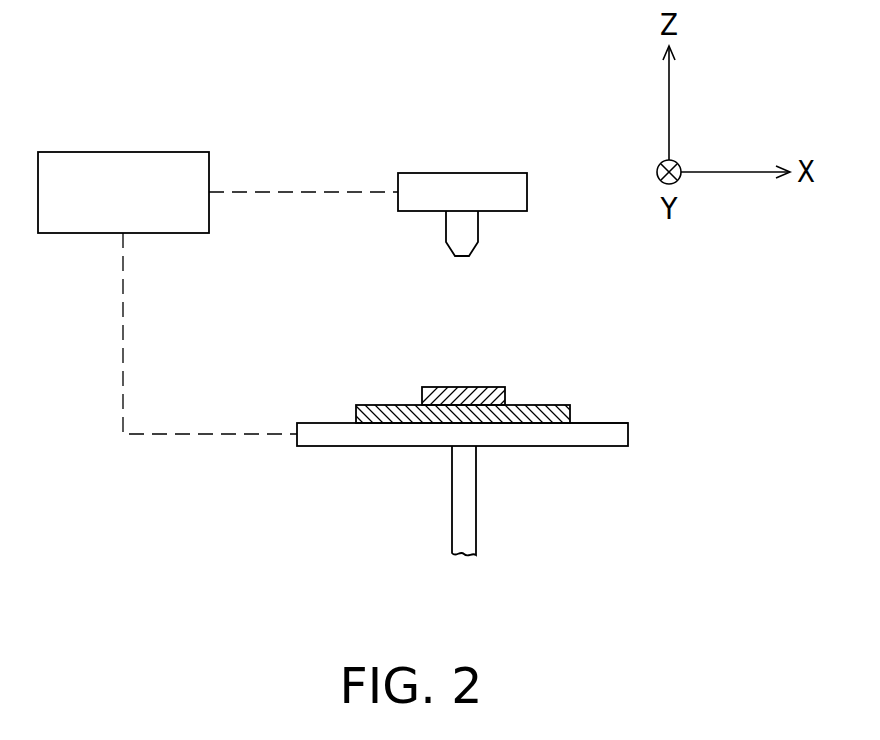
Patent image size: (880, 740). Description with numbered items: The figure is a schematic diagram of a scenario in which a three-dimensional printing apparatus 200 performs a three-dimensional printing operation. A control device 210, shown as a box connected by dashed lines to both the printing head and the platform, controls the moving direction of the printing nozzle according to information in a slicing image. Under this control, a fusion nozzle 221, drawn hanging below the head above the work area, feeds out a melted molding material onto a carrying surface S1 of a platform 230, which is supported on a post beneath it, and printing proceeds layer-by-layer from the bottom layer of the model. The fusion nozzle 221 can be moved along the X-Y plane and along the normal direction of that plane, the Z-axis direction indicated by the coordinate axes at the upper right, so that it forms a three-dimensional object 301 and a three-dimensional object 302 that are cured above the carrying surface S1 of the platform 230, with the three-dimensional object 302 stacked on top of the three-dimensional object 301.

The three-dimensional printing apparatus 200 is at (806, 582).
The control device 210 is at (123, 152).
The fusion nozzle 221 is at (478, 223).
The platform 230 is at (630, 432).
The 3D object 301 is at (532, 405).
The 3D object 302 is at (467, 387).
The carrying surface S1 is at (598, 421).